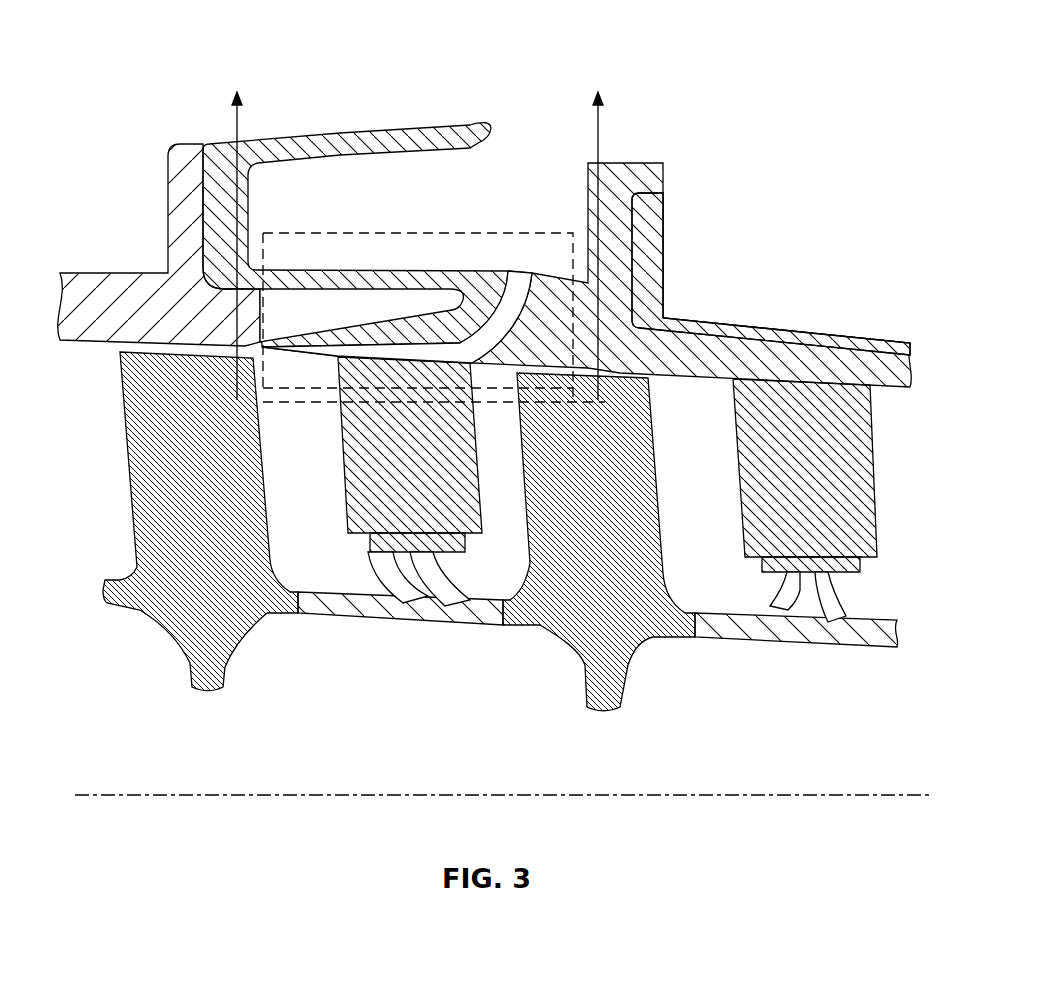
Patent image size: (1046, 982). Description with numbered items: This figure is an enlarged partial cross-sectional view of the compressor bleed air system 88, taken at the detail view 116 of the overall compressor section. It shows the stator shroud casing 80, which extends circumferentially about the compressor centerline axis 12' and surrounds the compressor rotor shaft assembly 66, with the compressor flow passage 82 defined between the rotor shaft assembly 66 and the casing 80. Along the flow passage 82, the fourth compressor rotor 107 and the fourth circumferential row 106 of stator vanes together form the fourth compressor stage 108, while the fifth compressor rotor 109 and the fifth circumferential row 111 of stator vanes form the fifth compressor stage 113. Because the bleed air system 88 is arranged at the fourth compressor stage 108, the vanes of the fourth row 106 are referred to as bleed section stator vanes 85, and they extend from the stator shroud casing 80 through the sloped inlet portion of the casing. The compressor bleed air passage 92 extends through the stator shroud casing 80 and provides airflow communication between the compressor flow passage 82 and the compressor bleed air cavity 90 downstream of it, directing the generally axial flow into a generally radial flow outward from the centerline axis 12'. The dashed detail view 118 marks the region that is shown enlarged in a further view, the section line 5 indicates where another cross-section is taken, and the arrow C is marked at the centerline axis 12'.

The section line 5 is at (418, 234).
The compressor rotor shaft assembly 66 is at (463, 612).
The stator shroud casing 80 is at (877, 326).
The compressor flow passage 82 is at (100, 484).
The bleed section stator vanes 85 is at (365, 522).
The compressor bleed air system 88 is at (570, 101).
The compressor bleed air cavity 90 is at (518, 164).
The compressor bleed air passage 92 is at (523, 270).
The fourth circumferential row 106 is at (410, 532).
The fourth compressor rotor 107 is at (141, 514).
The fourth compressor stage 108 is at (286, 634).
The fifth compressor rotor 109 is at (638, 625).
The fifth circumferential row 111 is at (852, 529).
The fifth compressor stage 113 is at (730, 656).
The detail view 116 is at (521, 78).
The detail view 118 is at (360, 232).
The rotation direction C is at (745, 780).
The compressor centerline axis 12' is at (507, 781).